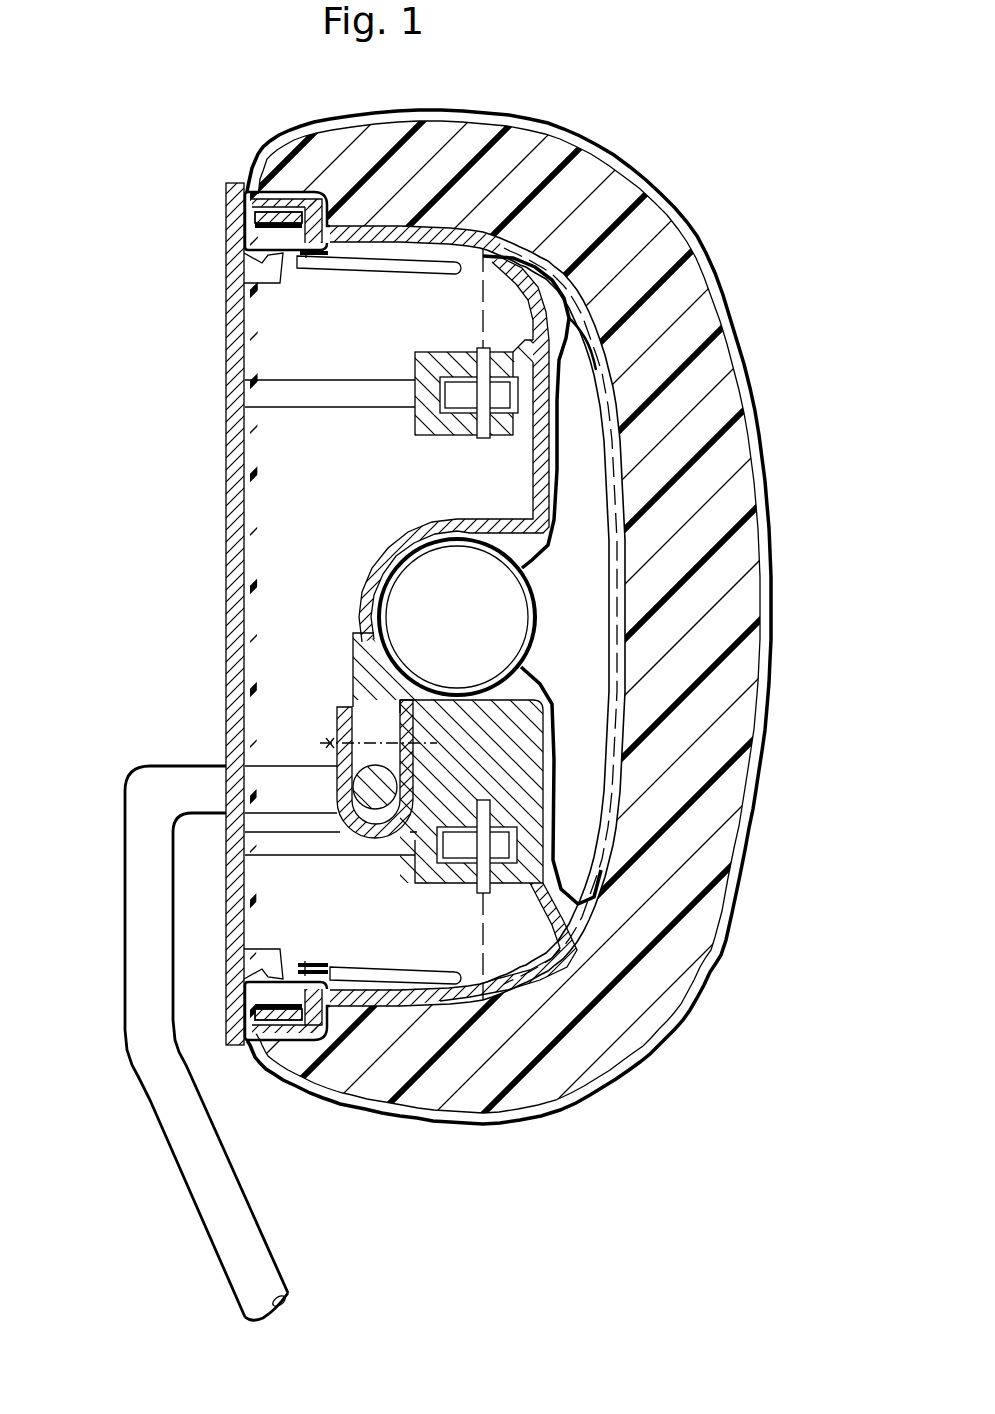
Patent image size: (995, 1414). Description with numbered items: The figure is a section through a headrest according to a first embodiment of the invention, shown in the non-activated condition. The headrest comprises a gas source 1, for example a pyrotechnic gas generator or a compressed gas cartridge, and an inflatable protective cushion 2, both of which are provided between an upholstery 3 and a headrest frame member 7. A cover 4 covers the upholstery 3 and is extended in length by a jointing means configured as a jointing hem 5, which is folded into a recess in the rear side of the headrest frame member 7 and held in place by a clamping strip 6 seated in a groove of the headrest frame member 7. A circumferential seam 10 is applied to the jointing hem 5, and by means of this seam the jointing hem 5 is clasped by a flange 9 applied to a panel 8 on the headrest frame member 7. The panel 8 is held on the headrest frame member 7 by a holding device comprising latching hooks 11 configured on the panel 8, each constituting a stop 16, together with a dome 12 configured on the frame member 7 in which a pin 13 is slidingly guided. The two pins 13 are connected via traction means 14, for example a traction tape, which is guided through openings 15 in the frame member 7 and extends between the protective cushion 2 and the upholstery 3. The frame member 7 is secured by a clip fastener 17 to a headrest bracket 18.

The gas source 1 is at (410, 573).
The inflatable protective cushion 2 is at (590, 548).
The upholstery 3 is at (720, 693).
The cover 4 is at (726, 300).
The jointing hem 5 is at (407, 270).
The clamping strip 6 is at (275, 212).
The headrest frame member 7 is at (530, 757).
The panel 8 is at (232, 575).
The flange 9 is at (262, 272).
The circumferential seam 10 is at (306, 257).
The latching hooks 11 is at (328, 395).
The dome 12 is at (435, 420).
The pin 13 is at (481, 350).
The traction means 14 is at (545, 255).
The openings 15 is at (483, 250).
The stop 16 is at (503, 400).
The clip fastener 17 is at (340, 715).
The headrest bracket 18 is at (158, 793).